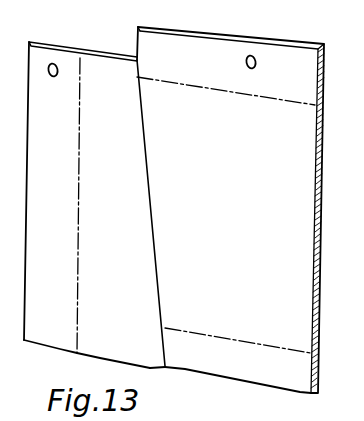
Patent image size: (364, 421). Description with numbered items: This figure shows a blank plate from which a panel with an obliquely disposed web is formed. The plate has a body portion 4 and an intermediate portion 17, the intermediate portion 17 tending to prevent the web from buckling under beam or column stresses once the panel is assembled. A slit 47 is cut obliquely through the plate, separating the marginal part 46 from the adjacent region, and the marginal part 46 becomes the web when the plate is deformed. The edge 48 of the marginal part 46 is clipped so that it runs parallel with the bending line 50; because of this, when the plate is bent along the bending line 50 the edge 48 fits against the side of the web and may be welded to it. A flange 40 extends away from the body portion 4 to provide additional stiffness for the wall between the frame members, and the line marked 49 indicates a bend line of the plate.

The body portion 4 is at (238, 350).
The intermediate portion 17 is at (231, 210).
The flange 40 is at (80, 197).
The marginal part 46 is at (87, 342).
The slit 47 is at (152, 219).
The edge 48 is at (137, 38).
The upper fold line 49 is at (226, 86).
The bending line 50 is at (166, 351).